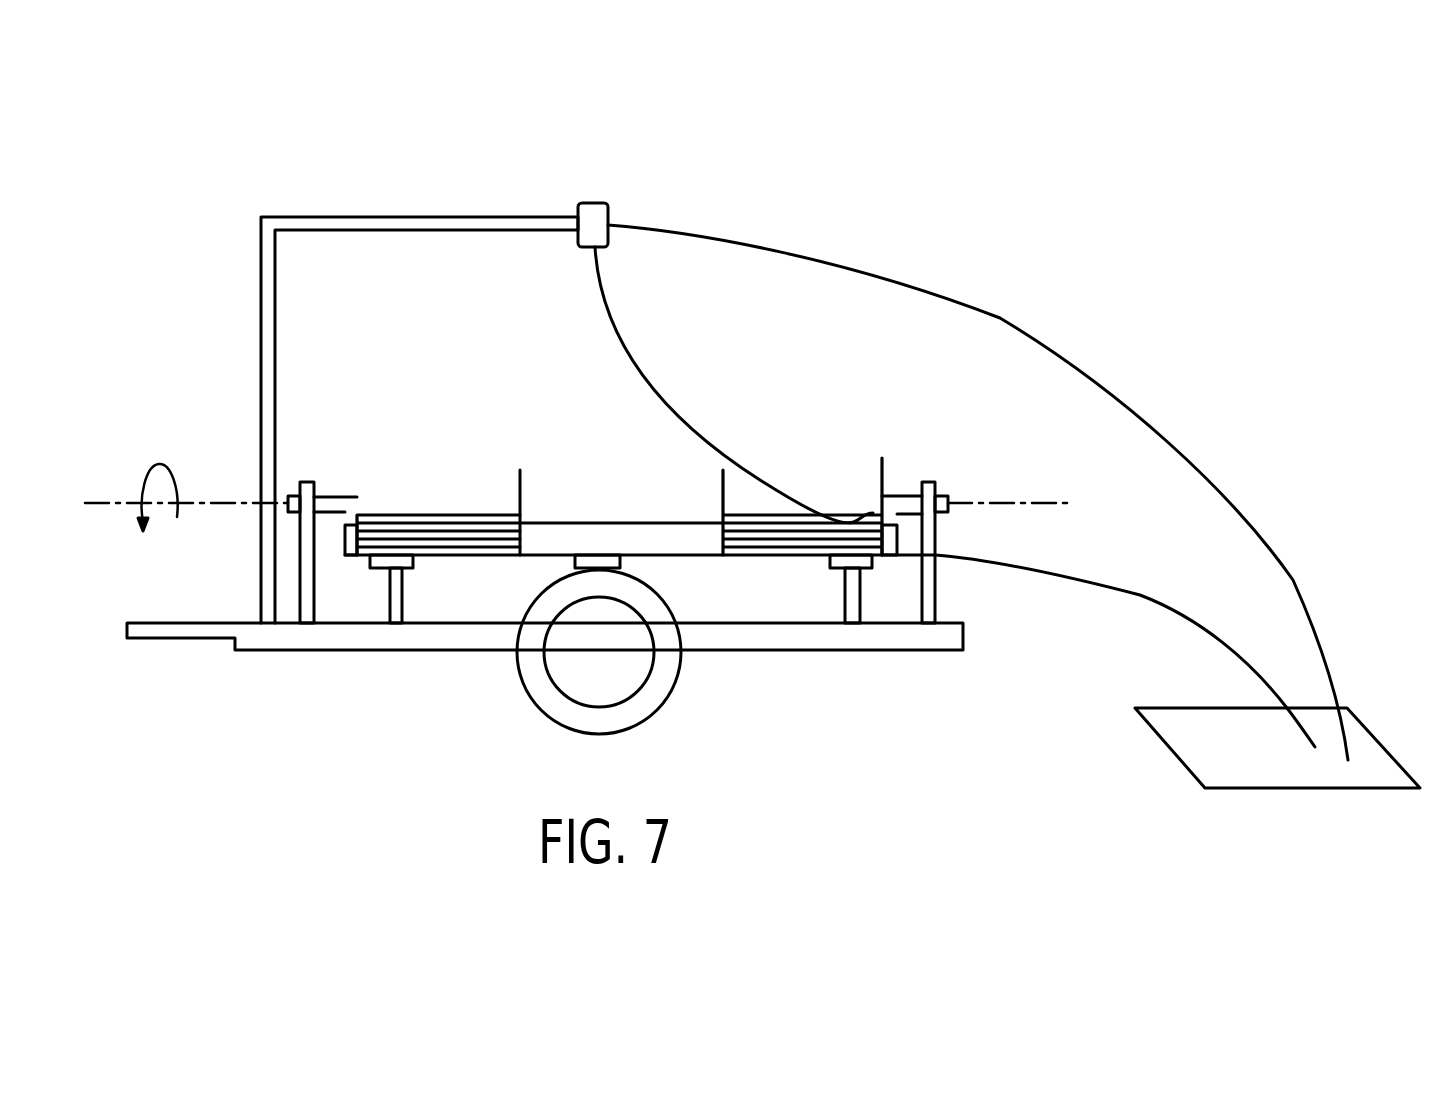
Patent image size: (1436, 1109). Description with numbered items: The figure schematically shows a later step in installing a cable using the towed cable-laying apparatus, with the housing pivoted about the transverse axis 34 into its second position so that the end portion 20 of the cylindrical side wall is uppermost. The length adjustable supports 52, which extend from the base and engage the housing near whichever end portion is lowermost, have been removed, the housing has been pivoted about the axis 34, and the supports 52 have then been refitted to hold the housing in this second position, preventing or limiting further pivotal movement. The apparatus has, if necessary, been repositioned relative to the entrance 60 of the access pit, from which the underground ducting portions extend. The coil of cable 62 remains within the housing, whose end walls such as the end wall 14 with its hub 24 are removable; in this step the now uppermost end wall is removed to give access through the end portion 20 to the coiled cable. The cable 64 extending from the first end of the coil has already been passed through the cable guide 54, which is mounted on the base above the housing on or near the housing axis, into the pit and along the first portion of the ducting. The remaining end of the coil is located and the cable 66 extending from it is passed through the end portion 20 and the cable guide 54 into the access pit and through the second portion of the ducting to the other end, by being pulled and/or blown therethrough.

The end wall 14 is at (537, 557).
The end portion 20 is at (357, 488).
The hub 24 is at (521, 484).
The axis 34 is at (1030, 503).
The length adjustable supports 52 is at (388, 598).
The cable guide 54 is at (587, 215).
The entrance 60 is at (1248, 757).
The coil of cable 62 is at (440, 514).
The cable 64 is at (1140, 595).
The cable 66 is at (933, 288).